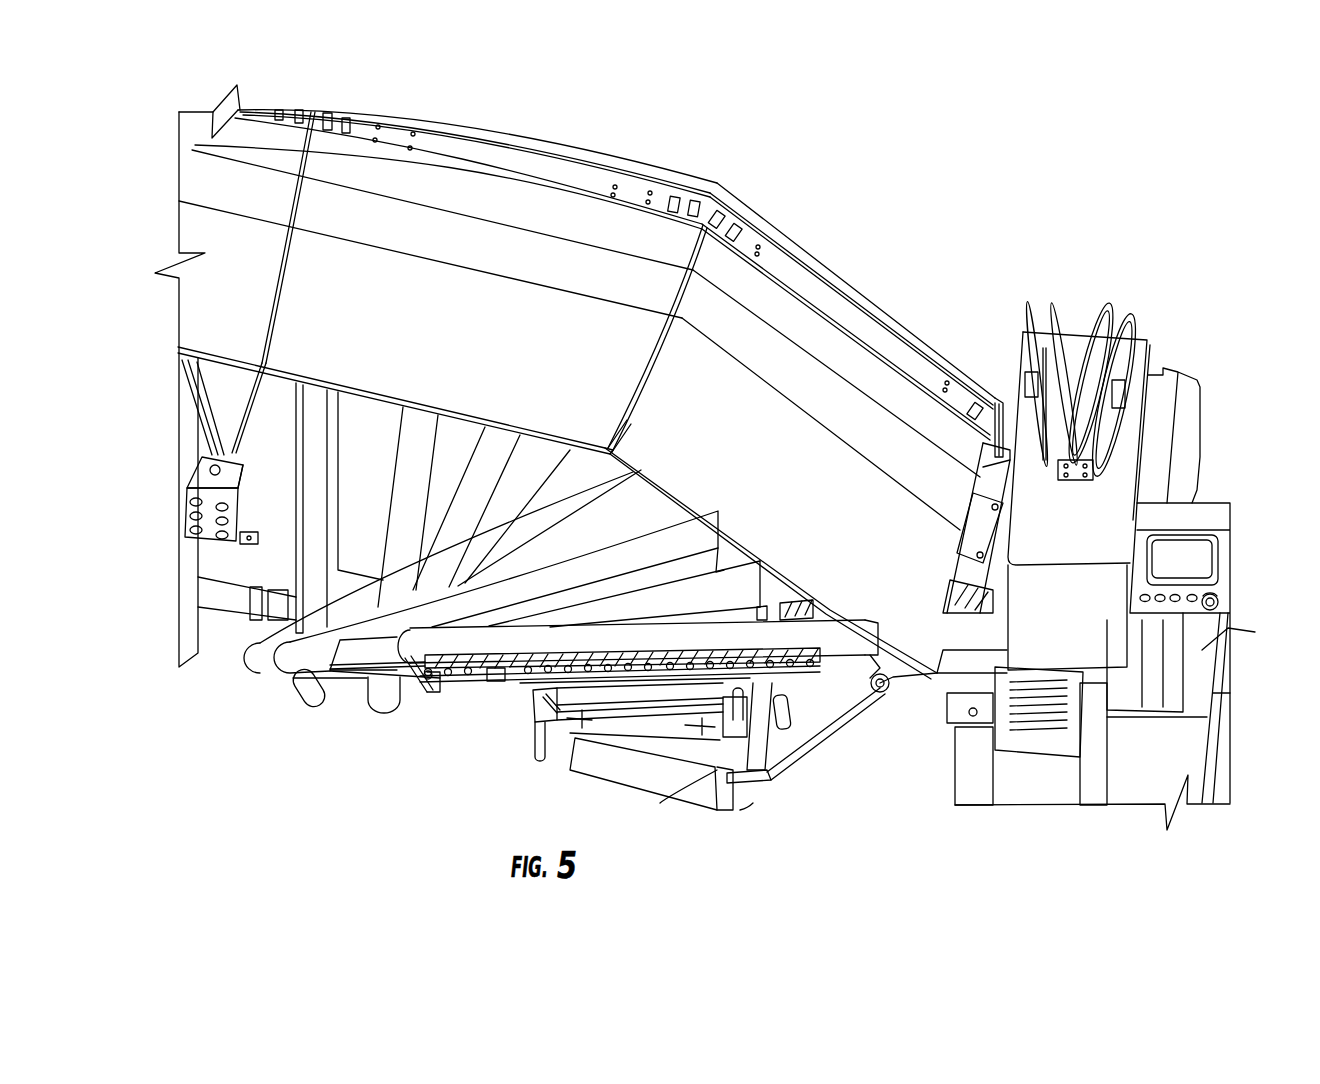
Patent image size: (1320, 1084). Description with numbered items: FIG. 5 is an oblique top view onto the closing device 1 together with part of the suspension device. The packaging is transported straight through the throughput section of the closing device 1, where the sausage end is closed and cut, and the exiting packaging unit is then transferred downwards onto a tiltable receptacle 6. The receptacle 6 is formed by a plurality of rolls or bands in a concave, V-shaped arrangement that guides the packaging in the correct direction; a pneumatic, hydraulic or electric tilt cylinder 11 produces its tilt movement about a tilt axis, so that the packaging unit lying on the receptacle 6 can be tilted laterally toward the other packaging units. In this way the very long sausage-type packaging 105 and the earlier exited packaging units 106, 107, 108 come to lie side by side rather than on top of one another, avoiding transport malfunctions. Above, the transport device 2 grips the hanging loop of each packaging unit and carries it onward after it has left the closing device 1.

The closing device 1 is at (1070, 620).
The transport device 2 is at (568, 184).
The tiltable receptacle 6 is at (478, 683).
The tilt cylinder 11 is at (787, 707).
The sausage-type packaging 105 is at (655, 656).
The packaging unit 106 is at (653, 621).
The packaging unit 107 is at (557, 591).
The packaging unit 108 is at (590, 545).